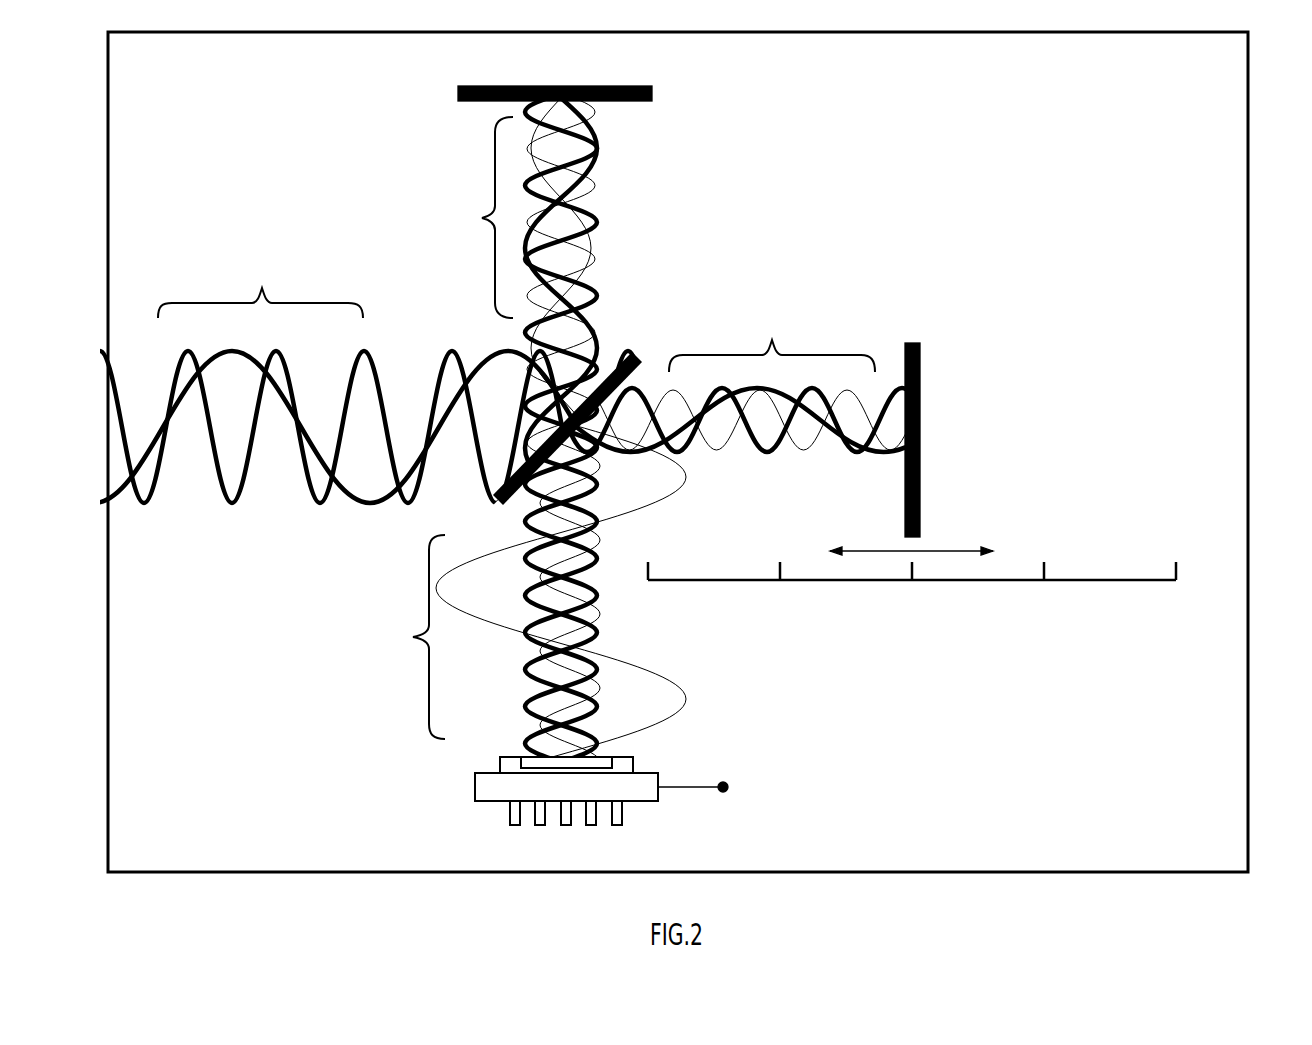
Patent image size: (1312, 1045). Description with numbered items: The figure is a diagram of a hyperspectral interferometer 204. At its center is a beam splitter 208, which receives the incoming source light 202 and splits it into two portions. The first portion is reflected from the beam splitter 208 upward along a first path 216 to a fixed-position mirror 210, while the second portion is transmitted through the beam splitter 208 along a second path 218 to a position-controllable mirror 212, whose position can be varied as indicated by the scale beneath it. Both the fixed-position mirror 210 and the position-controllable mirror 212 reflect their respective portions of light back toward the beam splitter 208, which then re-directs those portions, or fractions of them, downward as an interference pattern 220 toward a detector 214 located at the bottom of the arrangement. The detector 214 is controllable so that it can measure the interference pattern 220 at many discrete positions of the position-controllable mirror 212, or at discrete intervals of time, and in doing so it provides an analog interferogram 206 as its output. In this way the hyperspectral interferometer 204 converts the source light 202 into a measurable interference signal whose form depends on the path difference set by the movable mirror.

The source light 202 is at (392, 393).
The hyperspectral interferometer 204 is at (1248, 795).
The analog interferogram 206 is at (819, 788).
The beam splitter 208 is at (623, 350).
The fixed-position mirror 210 is at (619, 86).
The position-controllable mirror 212 is at (1002, 330).
The detector 214 is at (475, 787).
The first path 216 is at (474, 274).
The second path 218 is at (694, 367).
The interference pattern 220 is at (433, 574).